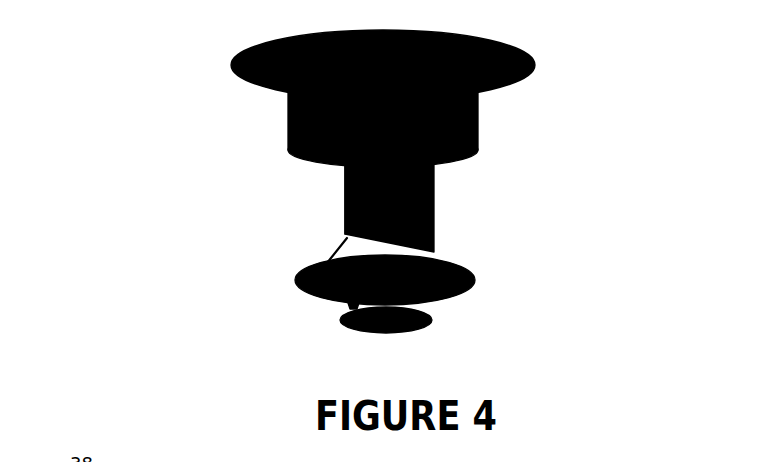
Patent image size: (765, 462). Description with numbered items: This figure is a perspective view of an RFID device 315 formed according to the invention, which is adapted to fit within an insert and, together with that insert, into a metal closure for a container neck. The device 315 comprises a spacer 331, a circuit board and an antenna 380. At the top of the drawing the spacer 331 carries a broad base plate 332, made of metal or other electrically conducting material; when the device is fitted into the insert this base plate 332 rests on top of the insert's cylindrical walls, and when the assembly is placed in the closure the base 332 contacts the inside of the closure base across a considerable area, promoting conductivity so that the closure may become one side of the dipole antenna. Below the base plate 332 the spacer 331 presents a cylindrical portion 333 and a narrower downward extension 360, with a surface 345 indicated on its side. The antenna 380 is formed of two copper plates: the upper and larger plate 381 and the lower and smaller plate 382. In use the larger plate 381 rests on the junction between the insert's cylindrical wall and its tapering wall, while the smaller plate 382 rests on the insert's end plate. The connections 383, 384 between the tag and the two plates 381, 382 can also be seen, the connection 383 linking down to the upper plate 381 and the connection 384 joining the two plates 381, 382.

The device 315 is at (366, 201).
The spacer 331 is at (440, 98).
The base plate 332 is at (440, 65).
The head body 333 is at (460, 126).
The rivet shank 360 is at (377, 201).
The shank surface 345 is at (290, 197).
The connection 383 is at (291, 248).
The antenna 380 is at (372, 313).
The upper plate 381 is at (426, 282).
The lower plate 382 is at (437, 330).
The connection 384 is at (308, 337).